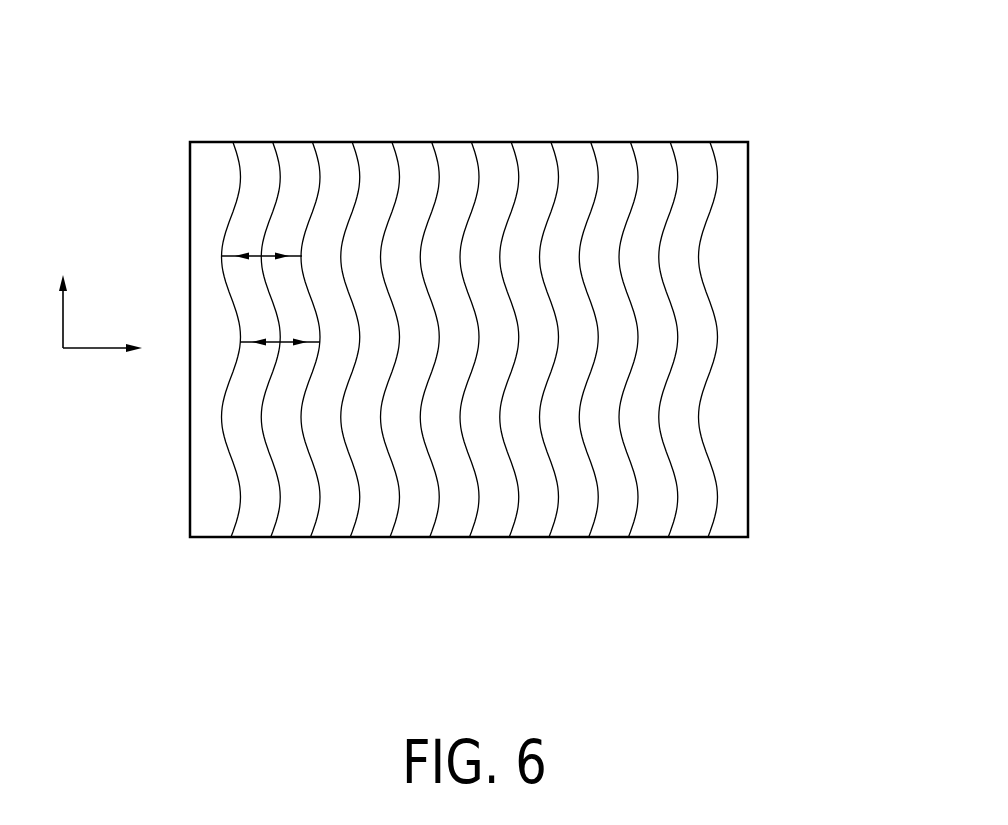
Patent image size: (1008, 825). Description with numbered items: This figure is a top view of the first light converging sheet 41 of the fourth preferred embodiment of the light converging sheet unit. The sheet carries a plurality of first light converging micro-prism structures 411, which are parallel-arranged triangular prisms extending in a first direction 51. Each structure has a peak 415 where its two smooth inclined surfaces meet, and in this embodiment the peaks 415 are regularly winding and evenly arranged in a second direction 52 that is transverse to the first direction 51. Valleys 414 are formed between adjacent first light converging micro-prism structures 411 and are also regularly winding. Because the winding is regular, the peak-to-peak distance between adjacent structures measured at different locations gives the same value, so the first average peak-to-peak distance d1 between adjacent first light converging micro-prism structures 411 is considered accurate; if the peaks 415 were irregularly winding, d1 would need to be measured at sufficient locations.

The first light converging sheet 41 is at (766, 287).
The first light converging micro-prism structures 411 is at (612, 128).
The valleys 414 is at (357, 167).
The peaks 415 is at (393, 522).
The first average peak-to-peak distance d1 is at (271, 280).
The first direction 51 is at (61, 293).
The second direction 52 is at (102, 373).